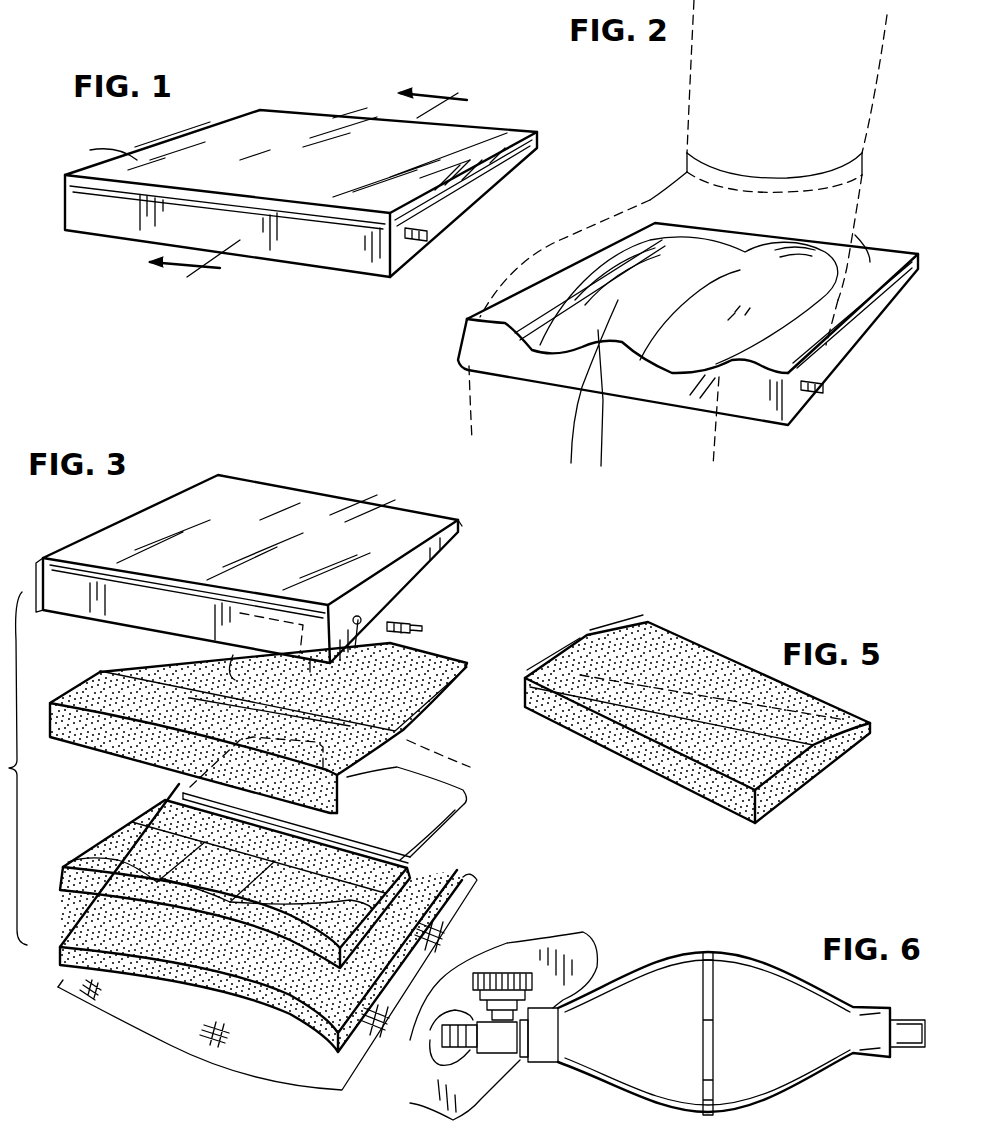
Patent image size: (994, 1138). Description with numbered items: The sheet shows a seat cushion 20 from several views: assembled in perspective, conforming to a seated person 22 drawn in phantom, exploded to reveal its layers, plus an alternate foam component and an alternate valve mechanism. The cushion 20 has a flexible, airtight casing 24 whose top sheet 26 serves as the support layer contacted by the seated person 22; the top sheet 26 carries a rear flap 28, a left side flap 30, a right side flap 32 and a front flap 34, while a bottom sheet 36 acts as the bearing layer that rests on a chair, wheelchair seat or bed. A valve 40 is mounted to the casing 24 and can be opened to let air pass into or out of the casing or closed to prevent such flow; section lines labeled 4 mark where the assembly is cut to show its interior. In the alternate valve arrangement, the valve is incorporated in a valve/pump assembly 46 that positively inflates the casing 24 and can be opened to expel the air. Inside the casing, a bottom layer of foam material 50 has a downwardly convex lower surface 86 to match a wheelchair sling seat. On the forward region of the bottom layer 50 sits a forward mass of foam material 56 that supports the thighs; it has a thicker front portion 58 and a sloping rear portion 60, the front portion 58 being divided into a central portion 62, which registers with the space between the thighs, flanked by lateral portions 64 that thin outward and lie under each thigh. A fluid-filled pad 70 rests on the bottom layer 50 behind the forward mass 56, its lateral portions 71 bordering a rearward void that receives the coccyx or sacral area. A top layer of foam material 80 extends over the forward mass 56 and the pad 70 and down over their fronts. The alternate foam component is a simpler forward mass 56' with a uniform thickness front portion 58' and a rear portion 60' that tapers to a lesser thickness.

In FIG. 1, the section line 4- 4 is at (319, 196).
In FIG. 1, the cushion 20 is at (303, 103).
In FIG. 2, the cushion 20 is at (859, 351).
In FIG. 2, the seated person 22 is at (847, 197).
In FIG. 1, the casing 24 is at (137, 160).
In FIG. 2, the casing 24 is at (868, 262).
In FIG. 3, the casing 24 is at (269, 569).
In FIG. 6, the casing 24 is at (588, 968).
In FIG. 3, the top sheet 26 is at (167, 517).
In FIG. 3, the rear flap 28 is at (463, 528).
In FIG. 3, the left side flap 30 is at (38, 573).
In FIG. 3, the right side flap 32 is at (415, 573).
In FIG. 6, the right side flap 32 is at (593, 917).
In FIG. 3, the front flap 34 is at (133, 615).
In FIG. 3, the bottom sheet 36 is at (286, 981).
In FIG. 1, the valve 40 is at (430, 242).
In FIG. 2, the valve 40 is at (819, 402).
In FIG. 3, the valve 40 is at (427, 622).
In FIG. 6, the valve/pump assembly 46 is at (668, 953).
In FIG. 3, the bottom layer of foam material 50 is at (467, 850).
In FIG. 3, the forward mass of foam material 56 is at (261, 918).
In FIG. 3, the front portion 58 is at (253, 910).
In FIG. 3, the sloping rear portion 60 is at (235, 868).
In FIG. 3, the central portion 62 is at (207, 867).
In FIG. 3, the lateral portions 64 is at (132, 847).
In FIG. 3, the fluid-filled pad 70 is at (460, 805).
In FIG. 3, the lateral portions 71 is at (452, 760).
In FIG. 3, the top layer of foam material 80 is at (438, 657).
In FIG. 3, the downwardly convex lower surface 86 is at (267, 1040).
In FIG. 5, the forward mass of resilient foam material 56' is at (697, 722).
In FIG. 5, the front portion 58' is at (553, 637).
In FIG. 5, the rear portion 60' is at (616, 605).